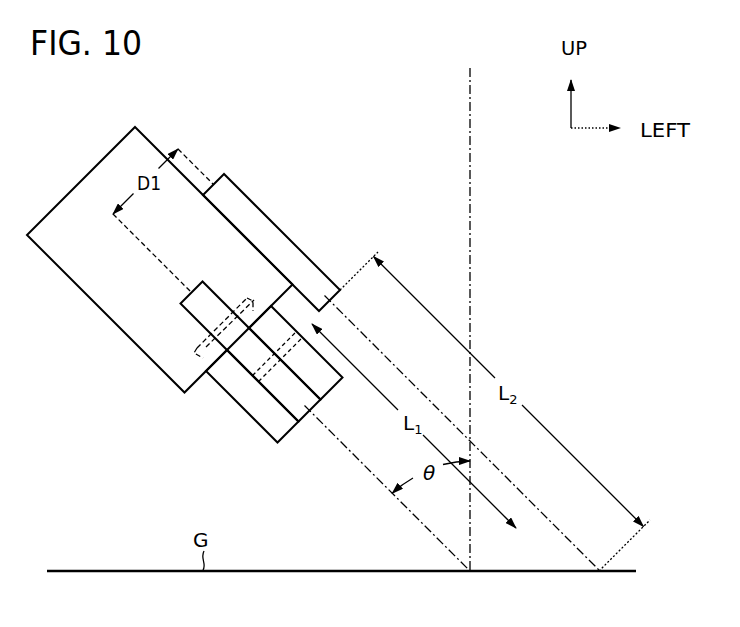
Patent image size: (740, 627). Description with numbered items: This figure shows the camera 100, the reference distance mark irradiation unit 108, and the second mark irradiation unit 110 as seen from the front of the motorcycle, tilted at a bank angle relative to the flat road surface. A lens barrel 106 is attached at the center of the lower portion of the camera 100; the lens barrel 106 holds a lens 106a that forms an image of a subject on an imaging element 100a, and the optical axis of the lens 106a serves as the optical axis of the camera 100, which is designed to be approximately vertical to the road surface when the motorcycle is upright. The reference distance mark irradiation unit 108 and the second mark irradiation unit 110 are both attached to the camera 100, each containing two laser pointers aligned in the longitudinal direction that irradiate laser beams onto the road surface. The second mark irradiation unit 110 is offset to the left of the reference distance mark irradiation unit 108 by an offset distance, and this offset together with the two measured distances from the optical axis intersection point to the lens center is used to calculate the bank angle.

The camera 100 is at (88, 176).
The imaging element 100a is at (206, 350).
The lens barrel 106 is at (267, 430).
The lens 106a is at (229, 373).
The reference distance mark irradiation unit 108 is at (308, 413).
The second mark irradiation unit 110 is at (268, 232).